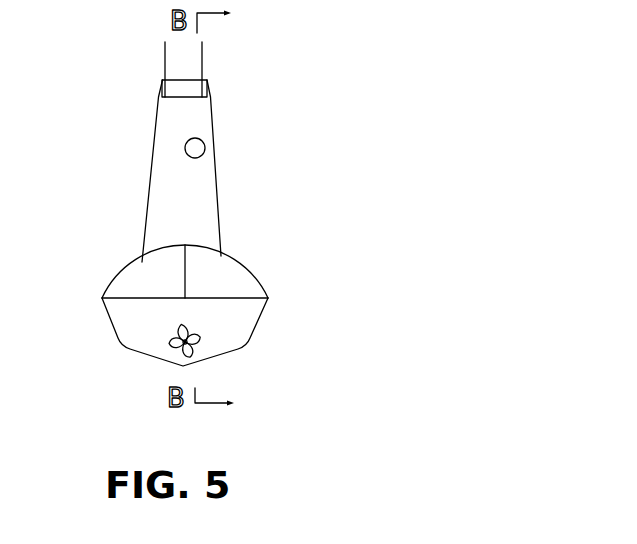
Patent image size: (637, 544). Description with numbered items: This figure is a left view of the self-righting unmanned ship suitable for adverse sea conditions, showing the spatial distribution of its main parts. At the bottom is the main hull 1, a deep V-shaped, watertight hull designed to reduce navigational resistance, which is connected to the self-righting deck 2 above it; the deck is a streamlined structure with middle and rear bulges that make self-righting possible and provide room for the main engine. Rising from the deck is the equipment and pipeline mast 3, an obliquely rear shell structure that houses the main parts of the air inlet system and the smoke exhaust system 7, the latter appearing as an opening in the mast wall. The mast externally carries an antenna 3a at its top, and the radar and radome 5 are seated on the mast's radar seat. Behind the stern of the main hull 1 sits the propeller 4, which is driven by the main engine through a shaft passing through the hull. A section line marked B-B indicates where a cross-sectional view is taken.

The main hull 1 is at (115, 310).
The self-righting deck 2 is at (246, 265).
The equipment and pipeline mast 3 is at (145, 176).
The antenna 3a is at (165, 42).
The propeller 4 is at (183, 344).
The radar and radome 5 is at (203, 80).
The smoke exhaust system 7 is at (185, 143).